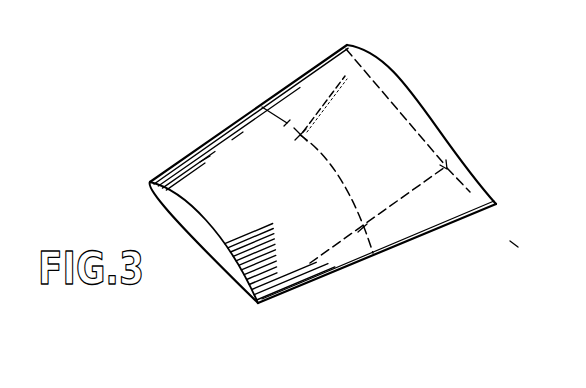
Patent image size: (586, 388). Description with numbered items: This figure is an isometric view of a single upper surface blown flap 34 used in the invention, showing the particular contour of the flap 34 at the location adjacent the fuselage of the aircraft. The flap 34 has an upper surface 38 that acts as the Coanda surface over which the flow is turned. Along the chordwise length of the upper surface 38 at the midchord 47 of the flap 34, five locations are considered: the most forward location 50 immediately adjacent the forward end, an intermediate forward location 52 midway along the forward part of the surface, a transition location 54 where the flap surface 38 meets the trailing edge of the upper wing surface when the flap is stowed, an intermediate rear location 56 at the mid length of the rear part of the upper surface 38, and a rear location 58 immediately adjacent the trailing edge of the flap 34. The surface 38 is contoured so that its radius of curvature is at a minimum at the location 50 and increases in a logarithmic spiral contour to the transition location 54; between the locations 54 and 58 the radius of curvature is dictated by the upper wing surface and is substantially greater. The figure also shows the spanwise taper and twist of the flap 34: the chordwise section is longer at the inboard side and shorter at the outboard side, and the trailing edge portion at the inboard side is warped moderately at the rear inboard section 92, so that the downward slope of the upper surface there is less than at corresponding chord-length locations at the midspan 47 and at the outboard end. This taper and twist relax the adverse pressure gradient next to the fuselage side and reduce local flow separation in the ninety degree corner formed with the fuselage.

The upper surface blown flap 34 is at (371, 103).
The upper surface 38 is at (250, 201).
The midchord 47 is at (286, 125).
The most forward location 50 is at (256, 109).
The intermediate forward location 52 is at (310, 133).
The transition location 54 is at (331, 163).
The intermediate rear location 56 is at (354, 212).
The rear location 58 is at (373, 253).
The rear inboard section 92 is at (470, 197).